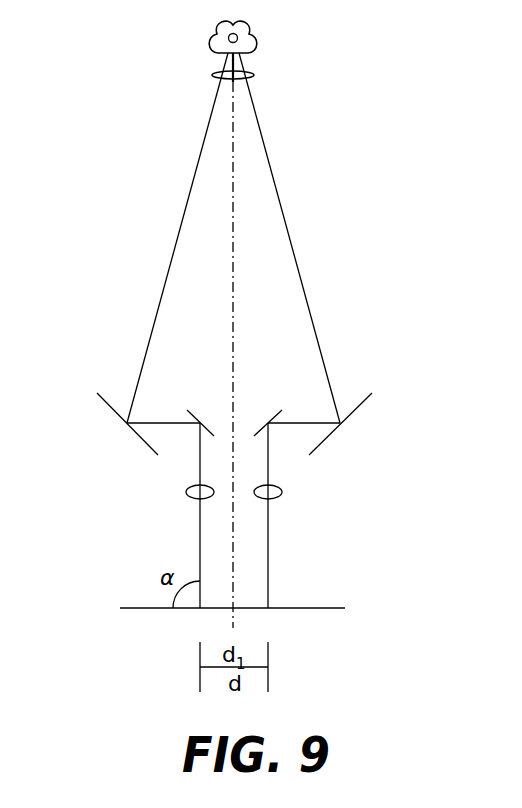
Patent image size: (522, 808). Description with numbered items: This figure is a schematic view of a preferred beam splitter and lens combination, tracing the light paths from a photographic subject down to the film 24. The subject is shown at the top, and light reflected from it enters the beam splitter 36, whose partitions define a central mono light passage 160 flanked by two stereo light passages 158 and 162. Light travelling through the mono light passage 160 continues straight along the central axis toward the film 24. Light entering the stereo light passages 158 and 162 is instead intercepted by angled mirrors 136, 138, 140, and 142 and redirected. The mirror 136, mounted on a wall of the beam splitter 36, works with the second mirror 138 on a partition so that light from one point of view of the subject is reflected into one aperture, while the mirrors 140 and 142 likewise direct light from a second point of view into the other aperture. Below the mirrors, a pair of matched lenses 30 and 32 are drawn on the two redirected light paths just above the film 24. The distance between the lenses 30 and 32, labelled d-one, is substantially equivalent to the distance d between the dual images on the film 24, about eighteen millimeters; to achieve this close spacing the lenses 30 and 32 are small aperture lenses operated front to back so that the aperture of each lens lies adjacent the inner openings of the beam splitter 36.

The film 24 is at (343, 608).
The lens 30 is at (282, 492).
The lens 32 is at (186, 492).
The beam splitter 36 is at (410, 375).
The mirror 136 is at (109, 410).
The second mirror 138 is at (195, 412).
The mirror 140 is at (280, 409).
The mirror 142 is at (362, 405).
The stereo light passage 158 is at (318, 411).
The mono light passage 160 is at (252, 427).
The stereo light passage 162 is at (122, 399).